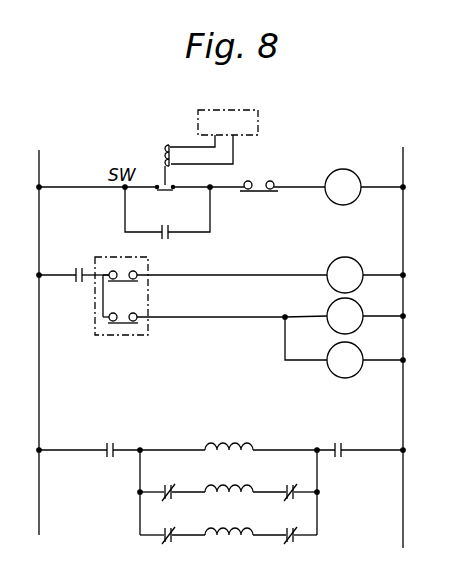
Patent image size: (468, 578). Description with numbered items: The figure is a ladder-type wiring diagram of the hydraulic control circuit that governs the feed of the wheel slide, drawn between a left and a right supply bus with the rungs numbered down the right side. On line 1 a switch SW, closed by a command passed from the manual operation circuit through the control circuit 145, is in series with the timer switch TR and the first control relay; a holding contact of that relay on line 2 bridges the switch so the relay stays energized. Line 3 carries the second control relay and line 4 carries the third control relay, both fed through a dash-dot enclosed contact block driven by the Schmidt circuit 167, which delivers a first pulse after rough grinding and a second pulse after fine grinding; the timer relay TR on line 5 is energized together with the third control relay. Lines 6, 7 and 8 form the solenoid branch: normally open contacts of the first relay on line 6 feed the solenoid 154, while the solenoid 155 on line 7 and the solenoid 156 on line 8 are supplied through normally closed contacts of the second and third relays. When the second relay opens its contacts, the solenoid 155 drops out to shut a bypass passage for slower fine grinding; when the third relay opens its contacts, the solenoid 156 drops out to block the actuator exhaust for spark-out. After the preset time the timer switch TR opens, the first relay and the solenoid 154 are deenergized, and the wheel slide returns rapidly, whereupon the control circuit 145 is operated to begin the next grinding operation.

The control circuit 145 is at (258, 127).
The Schmidt circuit 167 is at (170, 262).
The solenoid 154 is at (237, 440).
The solenoid 155 is at (215, 470).
The solenoid 156 is at (215, 513).
The line 1 is at (234, 200).
The line 2 is at (278, 225).
The line 3 is at (234, 273).
The line 4 is at (284, 316).
The line 5 is at (358, 347).
The line 6 is at (234, 474).
The line 7 is at (284, 486).
The line 8 is at (285, 528).